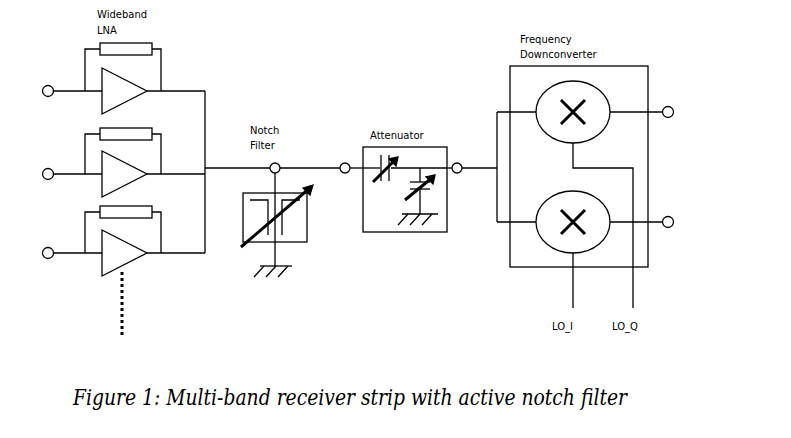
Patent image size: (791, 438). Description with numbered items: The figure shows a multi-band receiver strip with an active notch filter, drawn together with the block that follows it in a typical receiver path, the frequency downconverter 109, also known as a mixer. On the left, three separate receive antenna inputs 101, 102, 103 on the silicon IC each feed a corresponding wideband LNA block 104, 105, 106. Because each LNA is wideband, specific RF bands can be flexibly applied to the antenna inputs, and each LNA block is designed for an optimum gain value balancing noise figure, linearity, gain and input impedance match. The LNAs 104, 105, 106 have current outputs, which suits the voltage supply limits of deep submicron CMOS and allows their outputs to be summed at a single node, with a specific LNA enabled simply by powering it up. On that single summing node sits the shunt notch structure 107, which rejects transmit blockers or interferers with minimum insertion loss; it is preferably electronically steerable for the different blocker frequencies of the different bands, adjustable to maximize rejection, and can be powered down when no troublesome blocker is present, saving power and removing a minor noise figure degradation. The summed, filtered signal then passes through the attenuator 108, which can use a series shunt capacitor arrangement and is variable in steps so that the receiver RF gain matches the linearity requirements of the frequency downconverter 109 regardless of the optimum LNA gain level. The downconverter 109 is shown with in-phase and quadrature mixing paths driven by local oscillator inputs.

The receive antenna input 101 is at (66, 90).
The receive antenna input 102 is at (66, 173).
The receive antenna input 103 is at (66, 252).
The LNA block 104 is at (145, 78).
The LNA block 105 is at (145, 162).
The LNA block 106 is at (145, 241).
The shunt notch structure 107 is at (277, 225).
The attenuator 108 is at (405, 196).
The frequency downconverter 109 is at (585, 187).